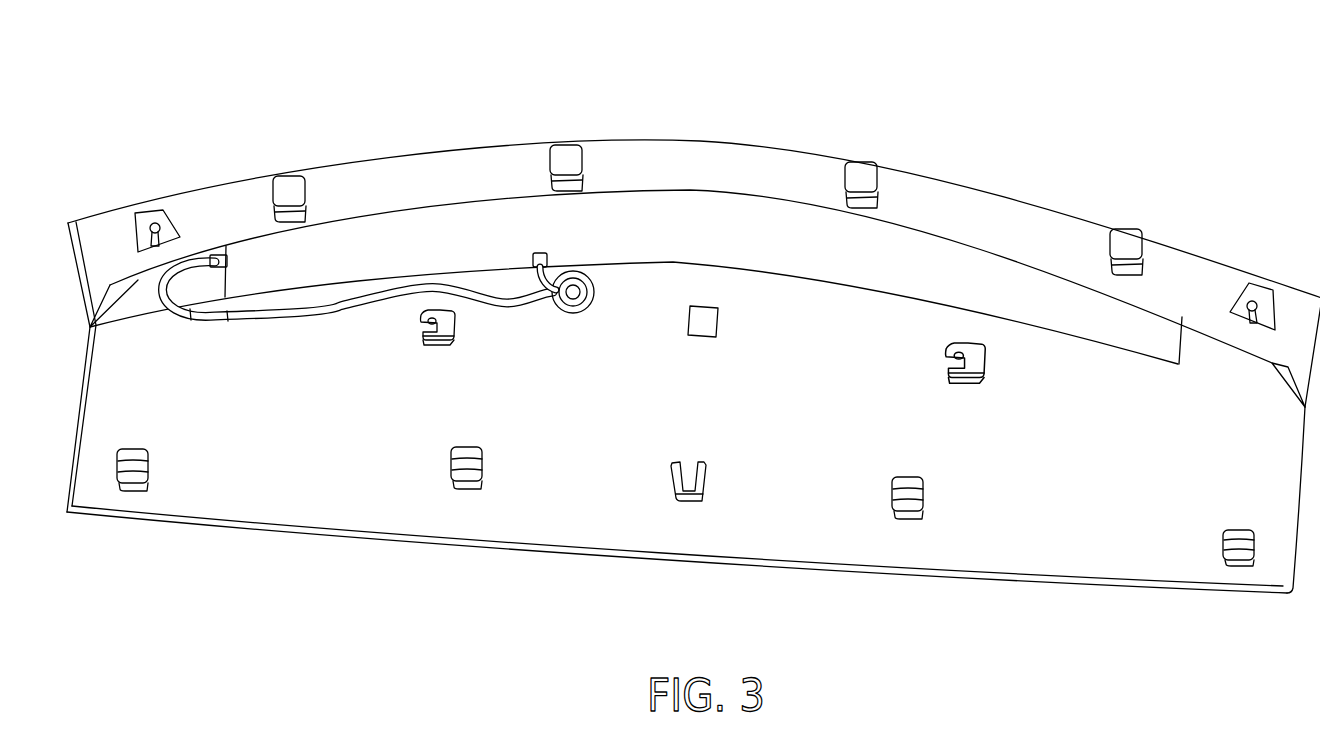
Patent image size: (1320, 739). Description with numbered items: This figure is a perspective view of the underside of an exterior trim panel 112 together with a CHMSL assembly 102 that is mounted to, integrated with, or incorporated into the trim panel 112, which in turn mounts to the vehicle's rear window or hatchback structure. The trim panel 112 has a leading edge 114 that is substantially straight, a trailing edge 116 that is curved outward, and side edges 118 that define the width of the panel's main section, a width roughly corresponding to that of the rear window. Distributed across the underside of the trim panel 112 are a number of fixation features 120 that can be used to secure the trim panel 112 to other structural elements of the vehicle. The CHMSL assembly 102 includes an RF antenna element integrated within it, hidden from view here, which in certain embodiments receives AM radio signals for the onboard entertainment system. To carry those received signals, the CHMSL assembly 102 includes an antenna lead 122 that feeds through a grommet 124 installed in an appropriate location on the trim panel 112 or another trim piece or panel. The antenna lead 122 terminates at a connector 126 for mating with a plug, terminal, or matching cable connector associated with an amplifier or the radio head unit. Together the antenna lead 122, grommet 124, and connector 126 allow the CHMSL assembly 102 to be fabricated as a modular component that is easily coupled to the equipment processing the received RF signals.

The CHMSL assembly 102 is at (662, 358).
The trim panel 112 is at (172, 157).
The leading edge 114 is at (880, 580).
The trailing edge 116 is at (698, 140).
The side edges 118 is at (75, 412).
The fixation features 120 is at (862, 170).
The antenna lead 122 is at (322, 320).
The grommet 124 is at (573, 312).
The connector 126 is at (540, 253).